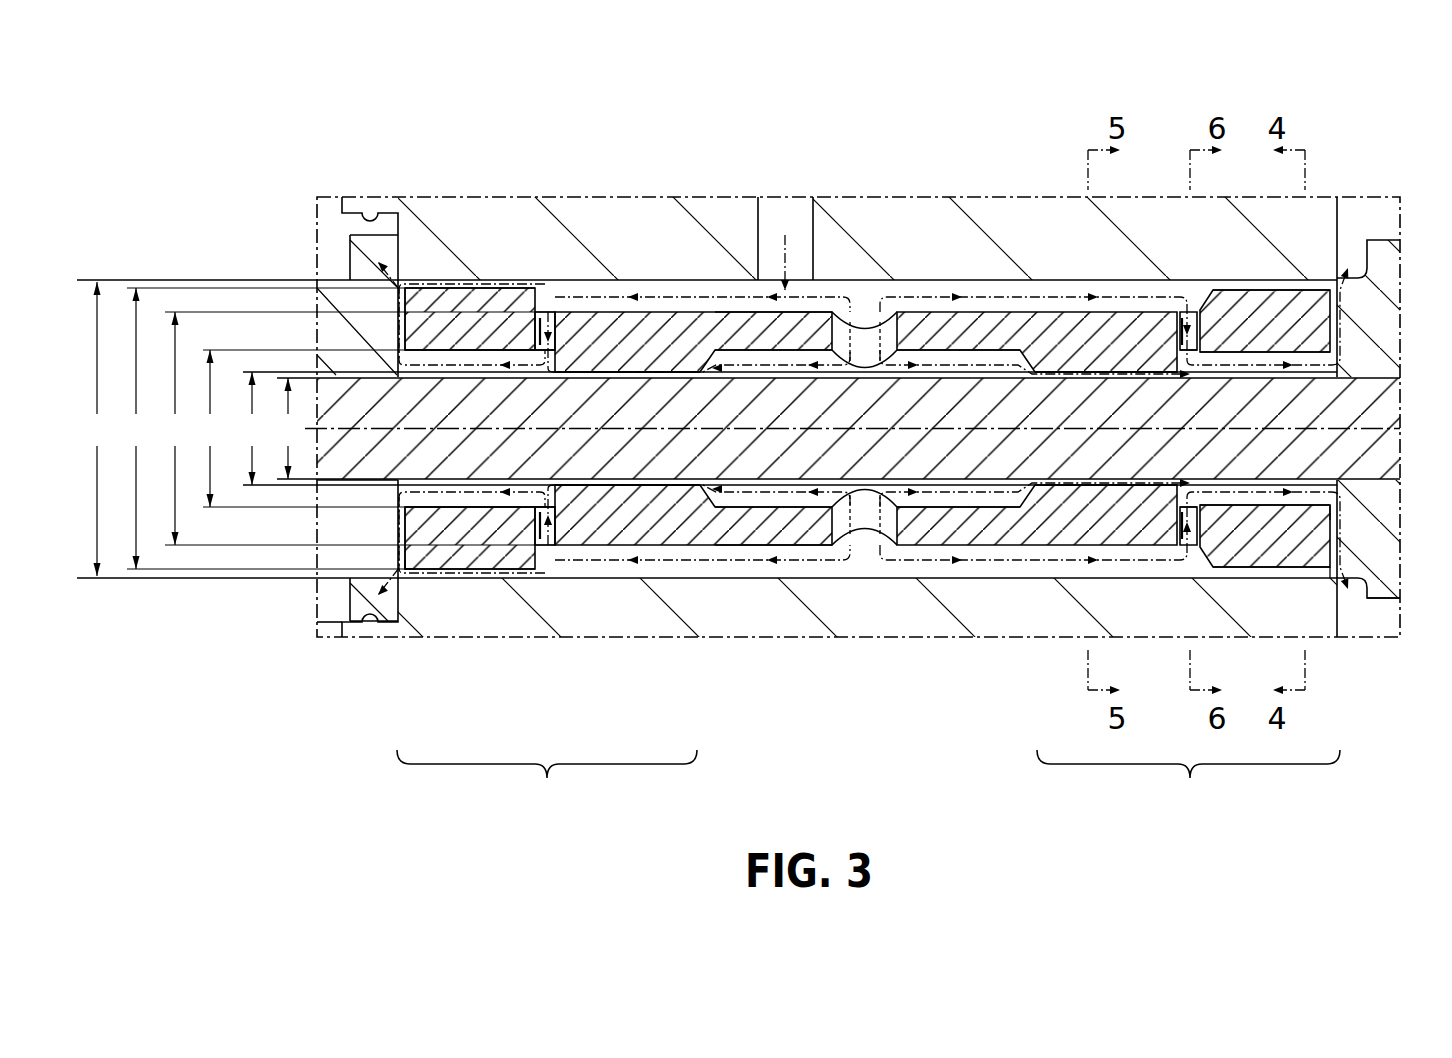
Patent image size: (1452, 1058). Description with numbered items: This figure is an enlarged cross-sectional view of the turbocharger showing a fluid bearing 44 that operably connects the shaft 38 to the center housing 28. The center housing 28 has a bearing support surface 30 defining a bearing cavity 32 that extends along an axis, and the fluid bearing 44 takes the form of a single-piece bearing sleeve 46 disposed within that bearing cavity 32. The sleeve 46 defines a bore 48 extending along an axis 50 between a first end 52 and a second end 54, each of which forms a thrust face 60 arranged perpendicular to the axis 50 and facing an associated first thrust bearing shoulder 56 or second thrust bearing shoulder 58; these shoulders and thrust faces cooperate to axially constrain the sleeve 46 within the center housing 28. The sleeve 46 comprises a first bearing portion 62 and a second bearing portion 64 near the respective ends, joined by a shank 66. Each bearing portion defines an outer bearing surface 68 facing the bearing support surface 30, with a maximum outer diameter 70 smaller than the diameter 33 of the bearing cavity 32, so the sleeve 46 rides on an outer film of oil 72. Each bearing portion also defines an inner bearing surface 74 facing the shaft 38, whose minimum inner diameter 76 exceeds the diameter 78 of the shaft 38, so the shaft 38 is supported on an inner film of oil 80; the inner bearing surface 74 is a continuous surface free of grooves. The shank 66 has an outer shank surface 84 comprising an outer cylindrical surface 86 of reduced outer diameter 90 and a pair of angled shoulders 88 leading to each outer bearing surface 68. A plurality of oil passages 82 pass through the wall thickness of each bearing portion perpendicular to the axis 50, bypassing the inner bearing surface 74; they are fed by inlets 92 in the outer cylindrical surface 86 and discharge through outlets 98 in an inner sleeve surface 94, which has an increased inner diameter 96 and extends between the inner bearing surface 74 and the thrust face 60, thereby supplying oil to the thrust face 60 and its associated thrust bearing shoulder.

The center housing 28 is at (372, 212).
The bearing support surface 30 is at (655, 287).
The bearing cavity 32 is at (693, 287).
The diameter of the bearing cavity 33 is at (97, 429).
The shaft 38 is at (350, 486).
The fluid bearing 44 is at (400, 300).
The single-piece bearing sleeve 46 is at (405, 332).
The bore 48 is at (772, 500).
The axis 50 is at (1382, 416).
The first end 52 is at (406, 566).
The second end 54 is at (1336, 582).
The first thrust bearing shoulder 56 is at (352, 604).
The second thrust bearing shoulder 58 is at (1352, 602).
The thrust face 60 is at (1335, 540).
The first bearing portion 62 is at (547, 781).
The second bearing portion 64 is at (1188, 781).
The shank 66 is at (818, 552).
The outer bearing surface 68 is at (1294, 290).
The maximum outer diameter 70 is at (263, 428).
The outer film of oil 72 is at (545, 296).
The inner bearing surface 74 is at (1085, 482).
The minimum inner diameter 76 is at (787, 428).
The diameter of the shaft 78 is at (288, 428).
The inner film of oil 80 is at (1040, 535).
The oil passages 82 is at (1190, 535).
The outer shank surface 84 is at (943, 312).
The outer cylindrical surface 86 is at (984, 312).
The shoulders 88 is at (1190, 570).
The reduced outer diameter 90 is at (357, 428).
The inlets 92 is at (1187, 548).
The inner sleeve surface 94 is at (460, 500).
The increased inner diameter 96 is at (375, 428).
The outlets 98 is at (1180, 540).